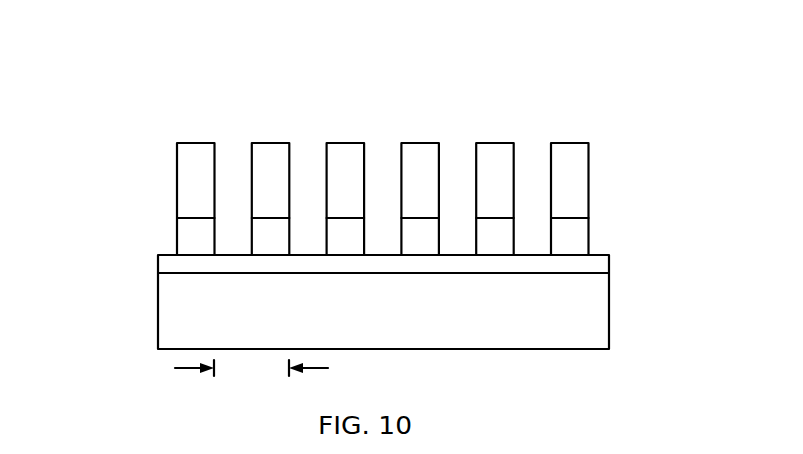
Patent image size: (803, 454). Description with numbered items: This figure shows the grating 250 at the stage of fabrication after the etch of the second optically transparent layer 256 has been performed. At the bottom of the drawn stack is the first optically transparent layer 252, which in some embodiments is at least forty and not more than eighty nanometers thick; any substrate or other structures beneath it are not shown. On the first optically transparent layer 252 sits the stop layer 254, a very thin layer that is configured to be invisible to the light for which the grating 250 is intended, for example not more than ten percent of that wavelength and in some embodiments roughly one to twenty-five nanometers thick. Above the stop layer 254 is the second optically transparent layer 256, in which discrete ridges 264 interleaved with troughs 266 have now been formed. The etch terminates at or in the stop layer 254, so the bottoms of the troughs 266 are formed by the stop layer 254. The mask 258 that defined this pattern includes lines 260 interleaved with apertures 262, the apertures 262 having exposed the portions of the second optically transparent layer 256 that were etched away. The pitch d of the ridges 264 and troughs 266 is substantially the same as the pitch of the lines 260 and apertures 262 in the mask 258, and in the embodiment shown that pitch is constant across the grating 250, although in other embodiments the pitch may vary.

The grating 250 is at (340, 42).
The first optically transparent layer 252 is at (609, 330).
The stop layer 254 is at (610, 268).
The second optically transparent layer 256 is at (338, 184).
The mask 258 is at (158, 177).
The lines 260 is at (570, 143).
The apertures 262 is at (233, 150).
The ridges 264 is at (582, 255).
The troughs 266 is at (236, 209).